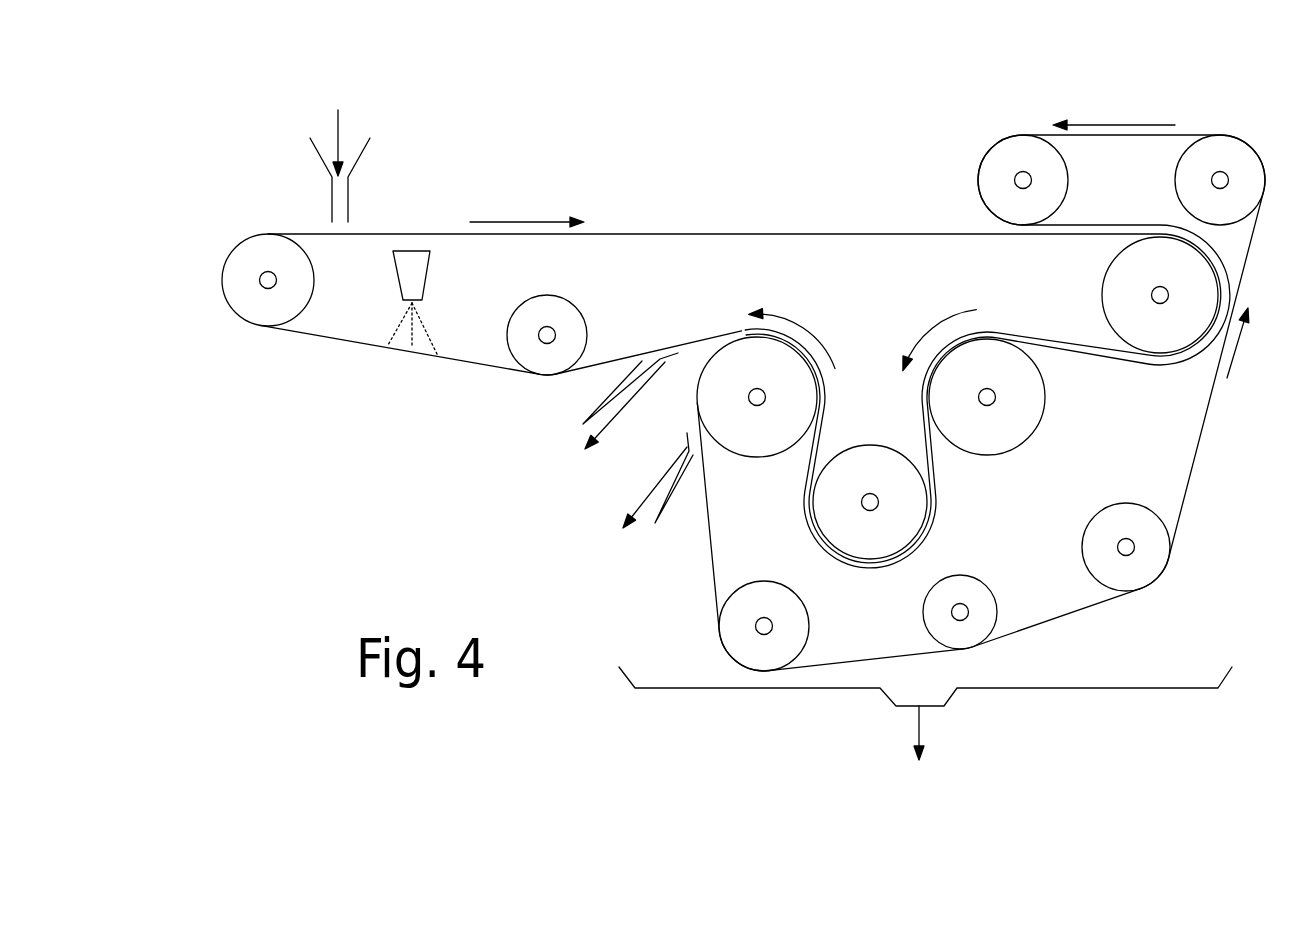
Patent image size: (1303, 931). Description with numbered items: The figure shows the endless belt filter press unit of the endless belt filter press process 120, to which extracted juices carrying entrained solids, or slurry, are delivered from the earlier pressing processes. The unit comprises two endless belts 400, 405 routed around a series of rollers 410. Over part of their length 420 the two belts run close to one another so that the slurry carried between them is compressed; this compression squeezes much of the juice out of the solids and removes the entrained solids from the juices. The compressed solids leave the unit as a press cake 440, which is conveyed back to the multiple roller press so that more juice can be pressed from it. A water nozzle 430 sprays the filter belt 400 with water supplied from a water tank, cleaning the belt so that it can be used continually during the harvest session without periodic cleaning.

The endless belt filter press process 120 is at (791, 113).
The endless belt 400 is at (805, 235).
The endless belt 405 is at (1185, 485).
The rollers 410 is at (248, 252).
The part of their length 420 is at (1063, 333).
The water nozzle 430 is at (413, 275).
The press cake 440 is at (548, 460).